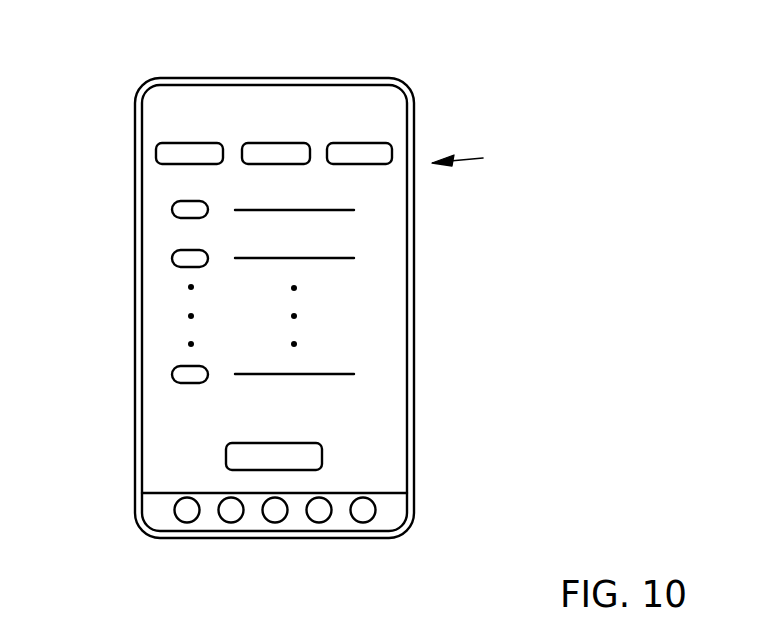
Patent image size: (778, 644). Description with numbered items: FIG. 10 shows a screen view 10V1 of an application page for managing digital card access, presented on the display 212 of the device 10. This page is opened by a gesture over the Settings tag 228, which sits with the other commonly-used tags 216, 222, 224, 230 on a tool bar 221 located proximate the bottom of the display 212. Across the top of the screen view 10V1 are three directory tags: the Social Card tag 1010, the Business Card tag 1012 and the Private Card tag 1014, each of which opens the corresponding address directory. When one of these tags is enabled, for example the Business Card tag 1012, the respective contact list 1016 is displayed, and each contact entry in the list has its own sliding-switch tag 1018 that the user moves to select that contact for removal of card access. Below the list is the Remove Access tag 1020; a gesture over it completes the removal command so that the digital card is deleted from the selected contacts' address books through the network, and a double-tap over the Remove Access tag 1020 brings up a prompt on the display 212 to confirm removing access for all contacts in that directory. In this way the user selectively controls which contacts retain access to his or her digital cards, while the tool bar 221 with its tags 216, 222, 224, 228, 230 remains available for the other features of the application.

The electronic device 10 is at (207, 78).
The display 212 is at (153, 118).
The screen view 10V1 is at (492, 160).
The Social Card tag 1010 is at (155, 153).
The Business Card tag 1012 is at (277, 142).
The Private Card tag 1014 is at (365, 142).
The contact list 1016 is at (327, 258).
The sliding-switch tag 1018 is at (182, 210).
The Remove Access tag 1020 is at (226, 457).
The tool bar 221 is at (152, 505).
The tag 216 is at (184, 512).
The tag 222 is at (231, 512).
The tag 224 is at (275, 513).
The Settings tag 228 is at (319, 512).
The tag 230 is at (363, 510).